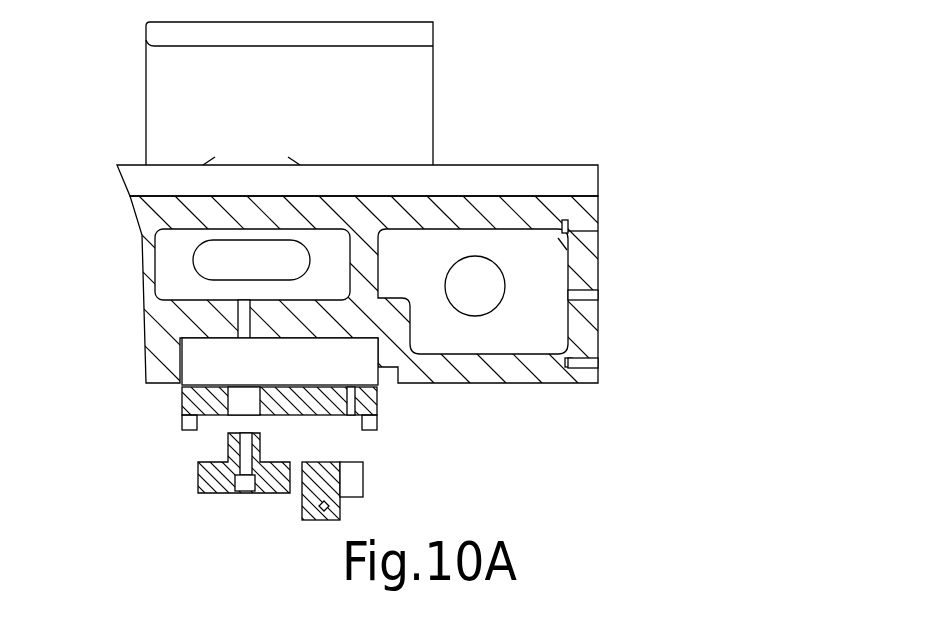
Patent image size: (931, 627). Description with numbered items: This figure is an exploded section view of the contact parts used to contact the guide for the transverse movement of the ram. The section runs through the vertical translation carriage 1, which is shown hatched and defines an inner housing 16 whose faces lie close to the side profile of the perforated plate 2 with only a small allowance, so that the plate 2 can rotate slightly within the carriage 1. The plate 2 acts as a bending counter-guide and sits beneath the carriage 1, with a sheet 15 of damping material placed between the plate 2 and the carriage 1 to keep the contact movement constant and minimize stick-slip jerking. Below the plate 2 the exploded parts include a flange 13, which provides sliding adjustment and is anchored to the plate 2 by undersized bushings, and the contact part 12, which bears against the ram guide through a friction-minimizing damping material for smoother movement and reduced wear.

The vertical translation carriage 1 is at (469, 214).
The perforated plate 2 is at (183, 403).
The contact part 12 is at (302, 500).
The flange 13 is at (198, 482).
The sheet of damping material 15 is at (208, 382).
The inner housing 16 is at (315, 360).